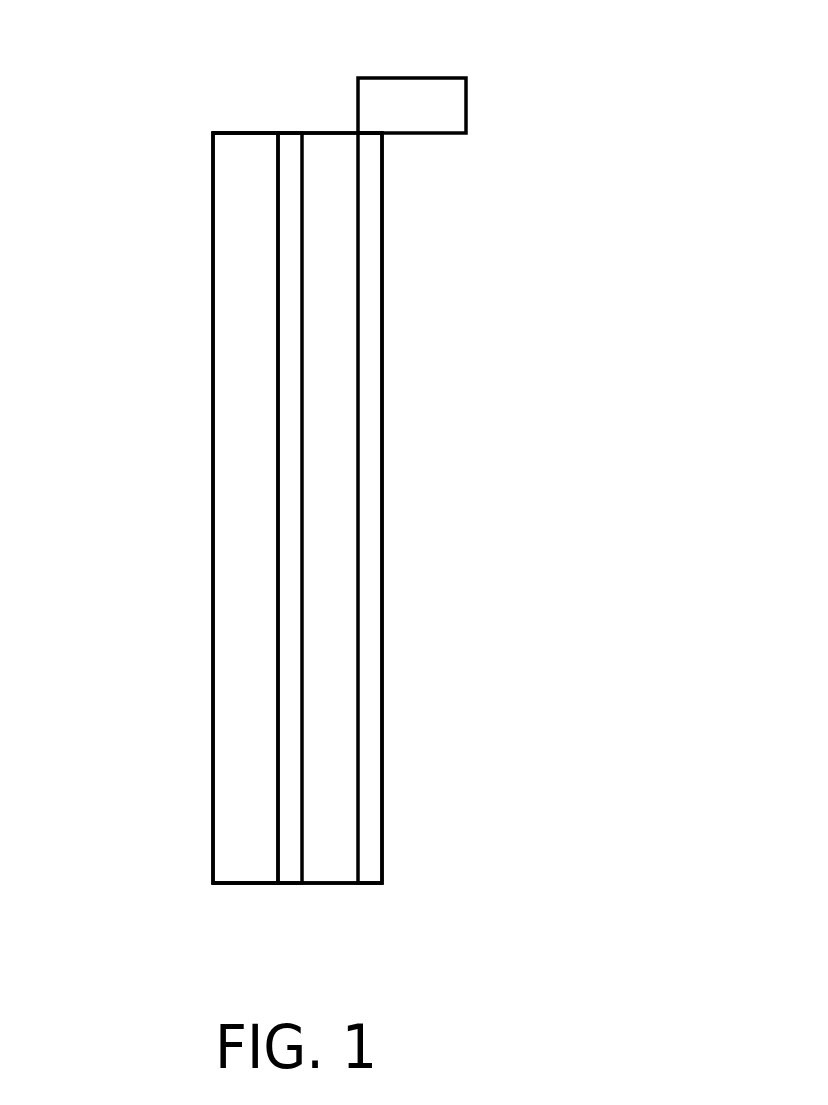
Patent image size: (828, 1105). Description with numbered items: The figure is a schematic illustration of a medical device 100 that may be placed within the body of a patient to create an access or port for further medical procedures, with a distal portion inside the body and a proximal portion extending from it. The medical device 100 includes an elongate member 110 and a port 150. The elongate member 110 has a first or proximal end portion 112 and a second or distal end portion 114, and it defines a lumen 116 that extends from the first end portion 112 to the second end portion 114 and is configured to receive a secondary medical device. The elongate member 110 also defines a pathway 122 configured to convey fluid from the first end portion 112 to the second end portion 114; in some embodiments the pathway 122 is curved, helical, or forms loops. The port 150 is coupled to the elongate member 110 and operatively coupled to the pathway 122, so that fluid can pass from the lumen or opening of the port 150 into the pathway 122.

The medical device 100 is at (118, 125).
The elongate member 110 is at (252, 450).
The first end portion 112 is at (228, 163).
The second end portion 114 is at (238, 867).
The lumen 116 is at (288, 380).
The pathway 122 is at (373, 172).
The port 150 is at (428, 97).